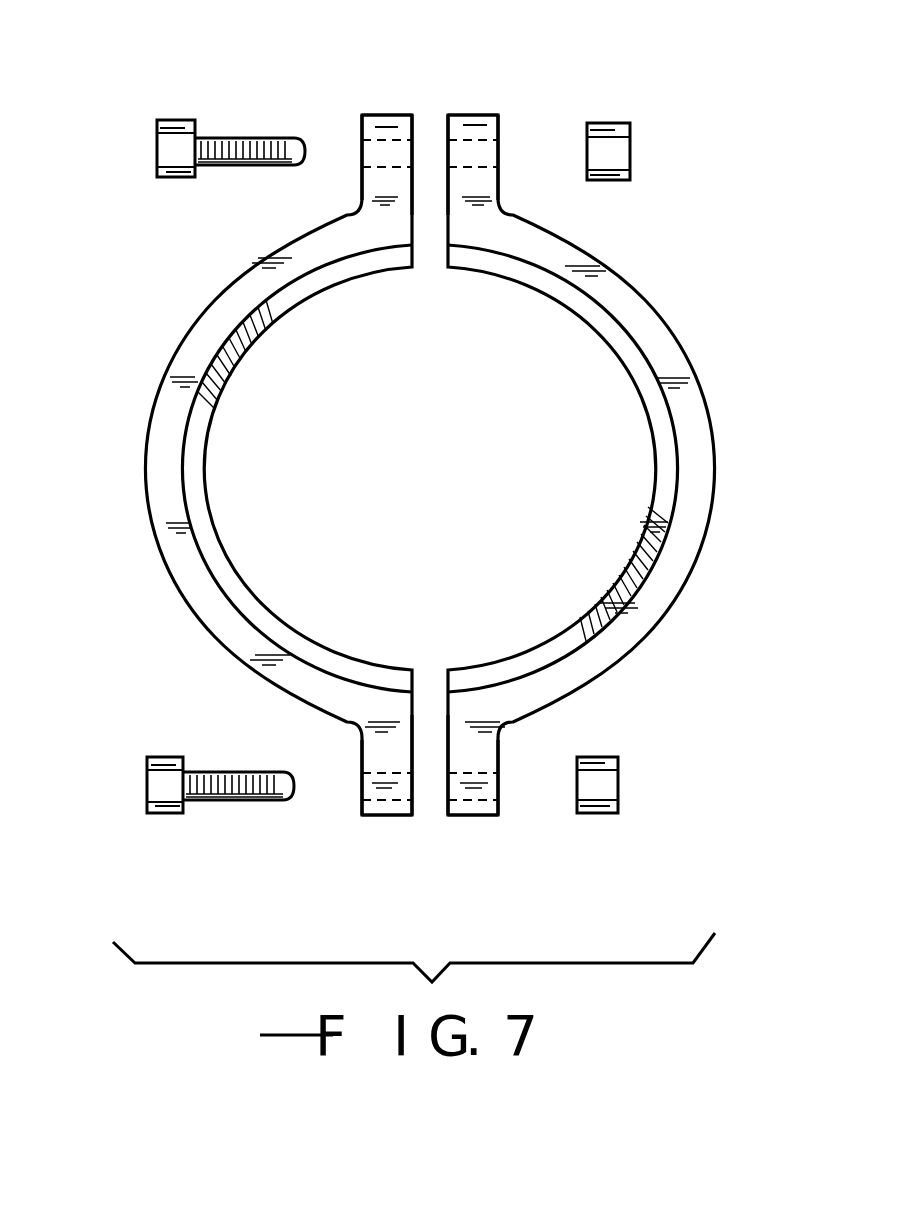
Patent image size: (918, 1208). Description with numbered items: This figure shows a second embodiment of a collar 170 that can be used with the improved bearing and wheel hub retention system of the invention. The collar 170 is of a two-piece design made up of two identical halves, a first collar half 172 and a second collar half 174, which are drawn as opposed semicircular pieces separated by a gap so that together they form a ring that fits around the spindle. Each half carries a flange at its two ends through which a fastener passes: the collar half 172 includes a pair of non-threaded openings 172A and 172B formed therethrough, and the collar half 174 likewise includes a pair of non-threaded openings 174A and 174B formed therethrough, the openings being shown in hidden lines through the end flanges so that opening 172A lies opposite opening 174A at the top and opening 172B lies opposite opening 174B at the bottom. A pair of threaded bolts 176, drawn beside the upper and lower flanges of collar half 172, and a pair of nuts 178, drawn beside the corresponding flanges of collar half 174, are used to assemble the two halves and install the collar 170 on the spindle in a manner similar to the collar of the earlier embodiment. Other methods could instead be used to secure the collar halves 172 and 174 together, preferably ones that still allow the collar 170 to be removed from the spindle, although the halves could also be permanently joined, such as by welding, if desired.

The collar 170 is at (563, 88).
The collar half 172 is at (156, 397).
The non-threaded opening 172A is at (387, 135).
The non-threaded opening 172B is at (365, 818).
The collar half 174 is at (705, 403).
The non-threaded opening 174A is at (480, 135).
The non-threaded opening 174B is at (493, 818).
The threaded bolts 176 is at (173, 118).
The nuts 178 is at (632, 127).